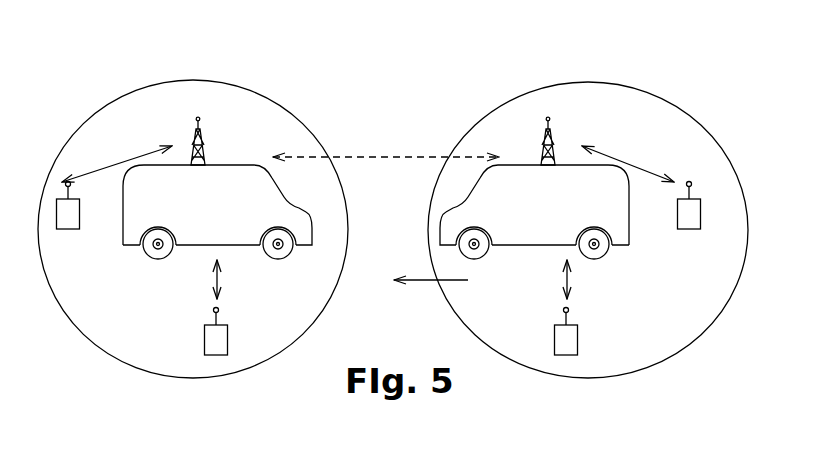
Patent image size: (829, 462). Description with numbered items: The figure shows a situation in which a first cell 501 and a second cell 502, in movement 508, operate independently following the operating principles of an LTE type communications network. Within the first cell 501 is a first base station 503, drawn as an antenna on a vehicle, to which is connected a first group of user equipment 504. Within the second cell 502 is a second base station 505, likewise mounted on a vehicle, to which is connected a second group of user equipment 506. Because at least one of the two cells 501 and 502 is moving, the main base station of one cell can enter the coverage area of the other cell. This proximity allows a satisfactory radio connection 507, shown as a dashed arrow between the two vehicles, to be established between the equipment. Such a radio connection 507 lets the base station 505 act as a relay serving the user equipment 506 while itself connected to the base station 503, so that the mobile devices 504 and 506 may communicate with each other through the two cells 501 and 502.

The first cell 501 is at (110, 138).
The second cell 502 is at (672, 137).
The first base station 503 is at (205, 142).
The first group of user equipment 504 is at (70, 219).
The second base station 505 is at (552, 141).
The second group of user equipment 506 is at (691, 218).
The radio connection 507 is at (382, 151).
The movement 508 is at (459, 284).